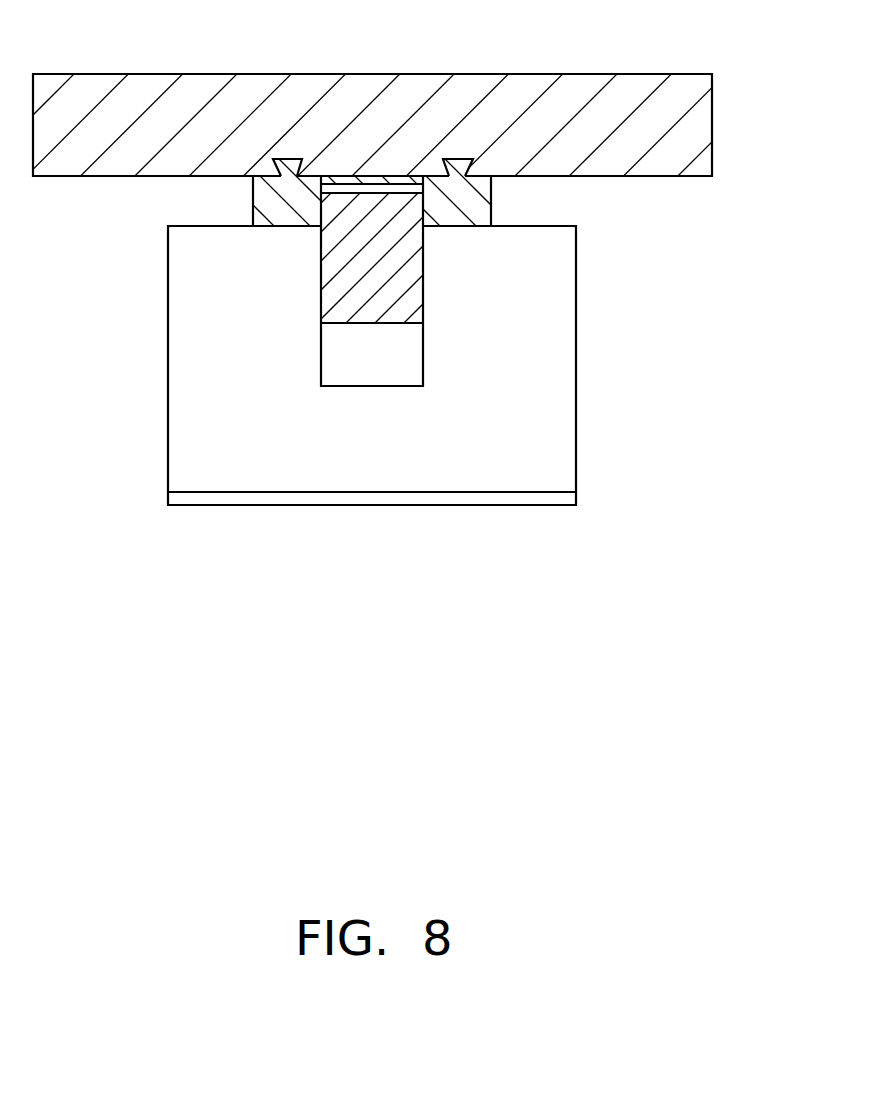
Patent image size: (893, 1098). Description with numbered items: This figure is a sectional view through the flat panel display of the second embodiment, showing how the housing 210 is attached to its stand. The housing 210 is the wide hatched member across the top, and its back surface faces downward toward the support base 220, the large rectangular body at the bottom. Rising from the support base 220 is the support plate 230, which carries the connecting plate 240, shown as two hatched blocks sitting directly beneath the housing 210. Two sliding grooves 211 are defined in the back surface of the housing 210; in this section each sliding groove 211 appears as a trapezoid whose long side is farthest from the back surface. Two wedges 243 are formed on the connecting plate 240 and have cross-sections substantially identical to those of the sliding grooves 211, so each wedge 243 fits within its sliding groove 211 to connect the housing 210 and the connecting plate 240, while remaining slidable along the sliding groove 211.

The housing 210 is at (675, 98).
The sliding groove 211 is at (278, 166).
The support base 220 is at (558, 260).
The support plate 230 is at (403, 300).
The connecting plate 240 is at (477, 202).
The wedge 243 is at (292, 168).